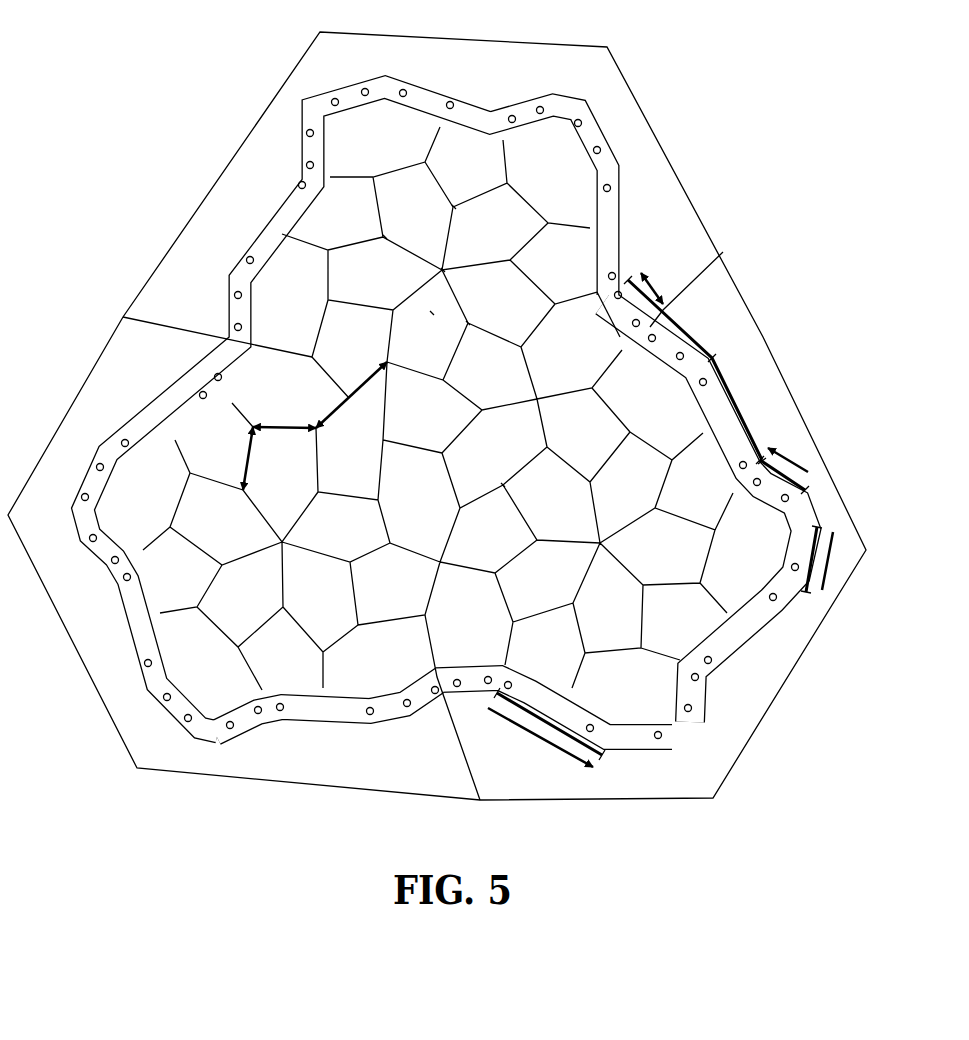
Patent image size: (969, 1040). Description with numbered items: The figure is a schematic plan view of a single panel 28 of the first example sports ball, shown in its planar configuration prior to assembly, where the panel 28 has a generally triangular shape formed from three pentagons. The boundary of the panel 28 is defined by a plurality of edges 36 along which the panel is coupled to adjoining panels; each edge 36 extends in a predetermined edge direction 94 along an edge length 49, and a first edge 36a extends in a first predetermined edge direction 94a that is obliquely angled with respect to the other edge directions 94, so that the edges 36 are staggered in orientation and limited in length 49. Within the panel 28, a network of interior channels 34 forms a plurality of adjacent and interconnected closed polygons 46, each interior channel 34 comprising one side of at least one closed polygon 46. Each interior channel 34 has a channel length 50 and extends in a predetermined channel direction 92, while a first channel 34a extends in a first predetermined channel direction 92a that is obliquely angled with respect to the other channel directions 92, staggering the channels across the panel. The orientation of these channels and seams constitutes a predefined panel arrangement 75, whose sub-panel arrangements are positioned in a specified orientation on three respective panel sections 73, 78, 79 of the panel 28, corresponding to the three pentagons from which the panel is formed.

The panel 28 is at (203, 98).
The interior channel 34 is at (598, 192).
The first channel 34a is at (237, 470).
The edge 36 is at (434, 95).
The first edge 36a is at (622, 330).
The closed polygon 46 is at (375, 138).
The edge length 49 is at (680, 330).
The channel length 50 is at (405, 237).
The panel section 73 is at (667, 150).
The predefined panel arrangement 75 is at (764, 92).
The panel section 78 is at (830, 463).
The panel section 79 is at (113, 720).
The predetermined channel direction 92 is at (285, 435).
The first predetermined channel direction 92a is at (240, 457).
The predetermined edge direction 94 is at (790, 475).
The first predetermined edge direction 94a is at (652, 290).